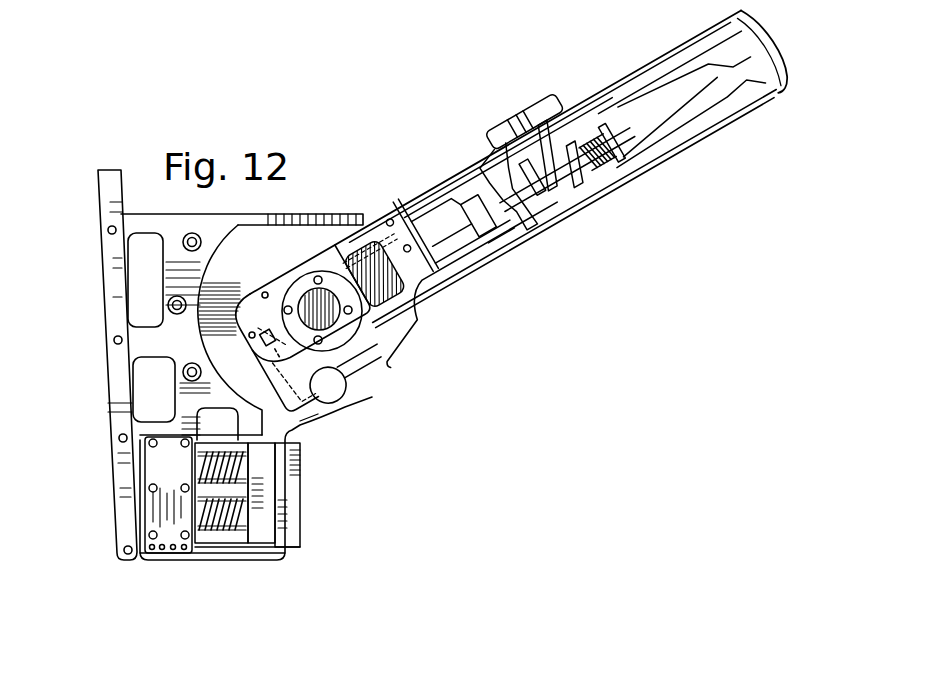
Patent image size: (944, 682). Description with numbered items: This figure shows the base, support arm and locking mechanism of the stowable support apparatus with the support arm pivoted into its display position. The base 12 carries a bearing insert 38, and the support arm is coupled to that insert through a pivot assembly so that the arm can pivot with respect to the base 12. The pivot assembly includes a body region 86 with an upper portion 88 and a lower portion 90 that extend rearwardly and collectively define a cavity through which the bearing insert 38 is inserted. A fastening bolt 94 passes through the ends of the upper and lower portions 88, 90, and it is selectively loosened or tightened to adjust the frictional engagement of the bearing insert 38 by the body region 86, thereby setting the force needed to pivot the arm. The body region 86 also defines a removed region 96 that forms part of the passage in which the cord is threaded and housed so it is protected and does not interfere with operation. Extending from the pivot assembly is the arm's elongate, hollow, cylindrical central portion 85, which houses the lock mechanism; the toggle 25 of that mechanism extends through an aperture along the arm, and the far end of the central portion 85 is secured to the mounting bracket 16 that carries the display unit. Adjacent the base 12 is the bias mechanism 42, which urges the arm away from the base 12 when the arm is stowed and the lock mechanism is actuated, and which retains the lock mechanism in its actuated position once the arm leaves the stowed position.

The base 12 is at (98, 446).
The mounting bracket 16 is at (430, 168).
The toggle 25 is at (549, 92).
The bearing insert 38 is at (347, 238).
The bias mechanism 42 is at (212, 577).
The central portion 85 is at (631, 70).
The body region 86 is at (418, 320).
The upper portion 88 is at (278, 278).
The lower portion 90 is at (265, 387).
The fastening bolt 94 is at (315, 428).
The removed region 96 is at (362, 346).